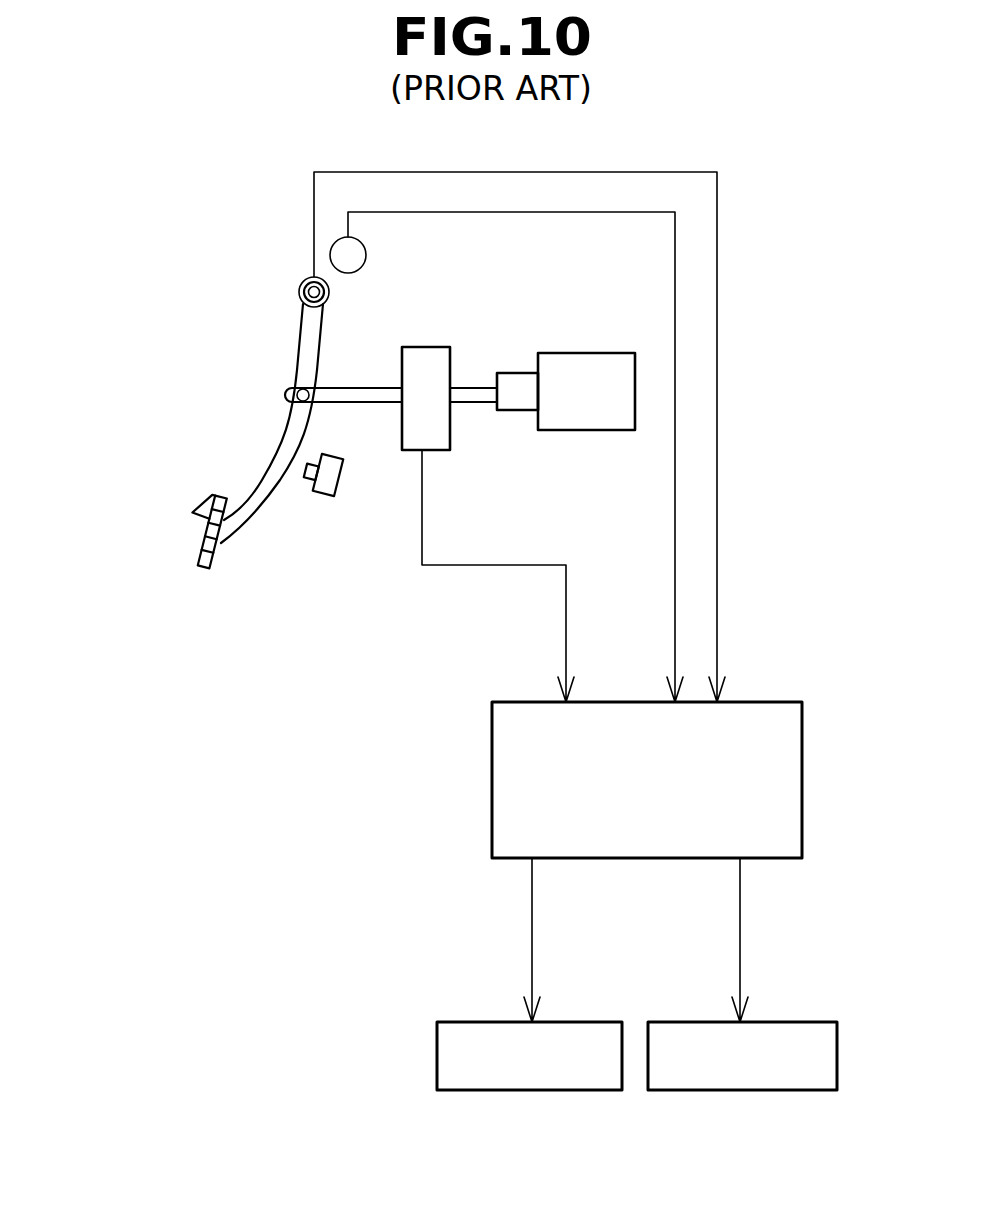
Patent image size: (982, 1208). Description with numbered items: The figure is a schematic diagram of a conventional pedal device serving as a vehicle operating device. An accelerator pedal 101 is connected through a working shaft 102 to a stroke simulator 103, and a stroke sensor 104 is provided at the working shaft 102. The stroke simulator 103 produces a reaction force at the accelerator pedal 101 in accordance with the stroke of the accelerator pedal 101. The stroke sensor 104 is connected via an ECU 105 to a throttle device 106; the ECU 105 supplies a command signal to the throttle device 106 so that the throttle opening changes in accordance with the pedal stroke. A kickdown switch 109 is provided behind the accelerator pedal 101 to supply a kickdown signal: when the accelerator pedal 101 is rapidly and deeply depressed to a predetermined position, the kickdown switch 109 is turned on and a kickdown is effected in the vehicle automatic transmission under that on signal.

The accelerator pedal 101 is at (198, 548).
The working shaft 102 is at (360, 388).
The stroke simulator 103 is at (590, 353).
The stroke sensor 104 is at (452, 368).
The ECU 105 is at (492, 778).
The throttle device 106 is at (437, 1053).
The kickdown switch 109 is at (320, 495).